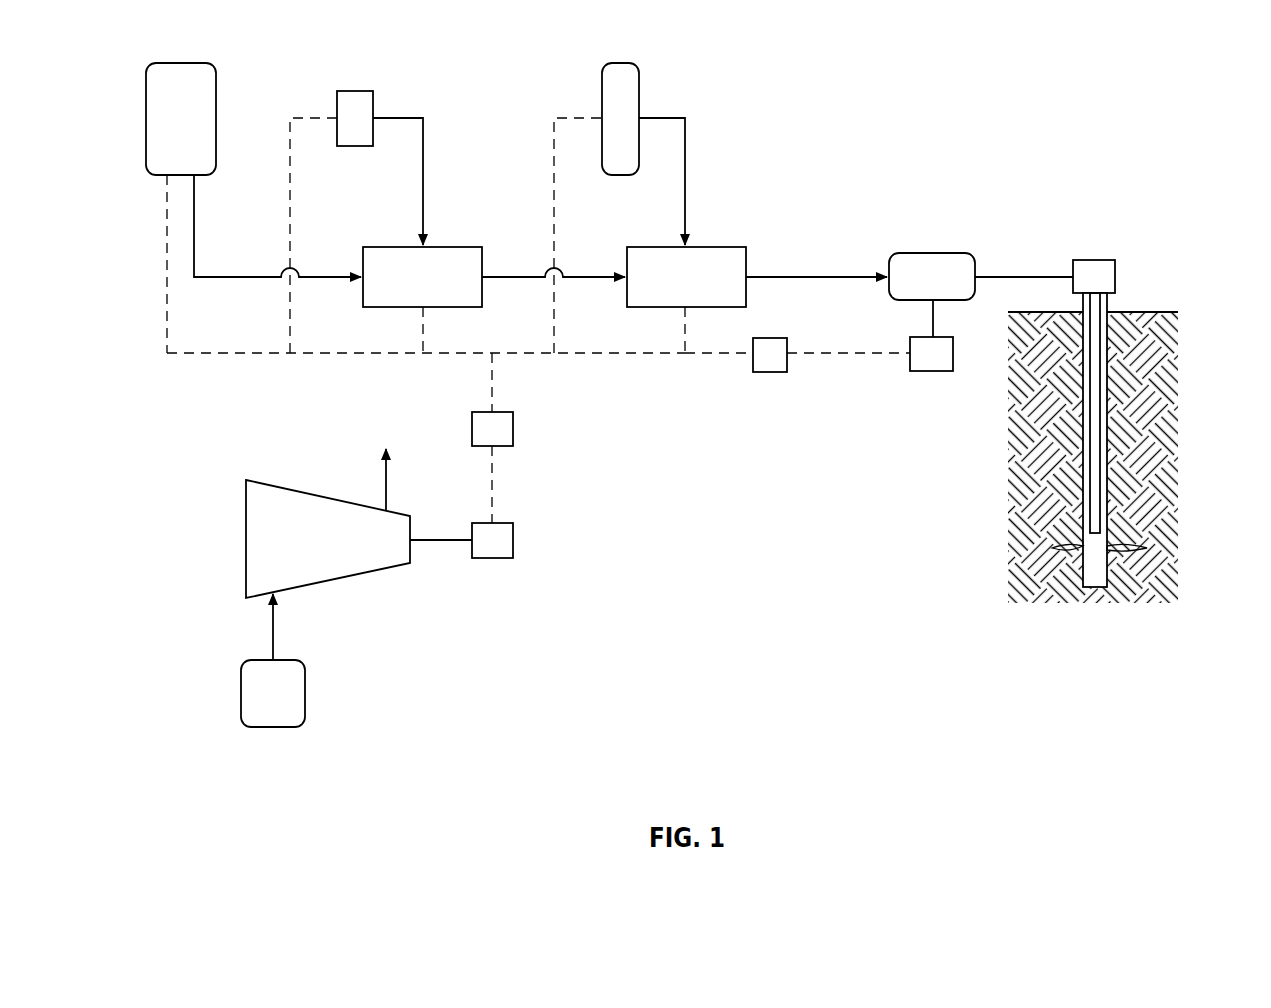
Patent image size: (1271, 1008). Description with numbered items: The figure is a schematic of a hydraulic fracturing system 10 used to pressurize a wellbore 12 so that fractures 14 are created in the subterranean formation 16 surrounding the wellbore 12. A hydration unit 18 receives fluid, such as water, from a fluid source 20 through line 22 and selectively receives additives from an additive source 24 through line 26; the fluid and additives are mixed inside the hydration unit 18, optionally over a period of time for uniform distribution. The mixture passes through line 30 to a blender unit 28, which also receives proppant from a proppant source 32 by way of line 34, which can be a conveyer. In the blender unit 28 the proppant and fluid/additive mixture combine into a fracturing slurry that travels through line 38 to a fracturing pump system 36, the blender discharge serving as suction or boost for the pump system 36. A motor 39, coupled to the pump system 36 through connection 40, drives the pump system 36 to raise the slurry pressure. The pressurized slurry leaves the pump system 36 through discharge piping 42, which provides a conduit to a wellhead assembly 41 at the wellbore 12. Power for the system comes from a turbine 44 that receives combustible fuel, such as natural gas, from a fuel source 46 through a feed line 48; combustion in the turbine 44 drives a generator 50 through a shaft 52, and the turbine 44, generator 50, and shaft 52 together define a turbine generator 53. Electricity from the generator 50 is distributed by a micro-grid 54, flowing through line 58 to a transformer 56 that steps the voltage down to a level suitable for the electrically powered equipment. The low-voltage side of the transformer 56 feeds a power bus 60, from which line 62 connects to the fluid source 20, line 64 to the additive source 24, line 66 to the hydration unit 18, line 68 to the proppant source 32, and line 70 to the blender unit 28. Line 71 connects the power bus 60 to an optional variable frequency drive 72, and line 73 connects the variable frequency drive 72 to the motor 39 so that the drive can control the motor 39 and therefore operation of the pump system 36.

The hydraulic fracturing system 10 is at (1063, 82).
The wellbore 12 is at (1107, 377).
The fractures 14 is at (1137, 548).
The subterranean formation 16 is at (1150, 437).
The hydration unit 18 is at (442, 247).
The fluid source 20 is at (146, 120).
The line 22 is at (222, 277).
The additive source 24 is at (350, 91).
The line 26 is at (395, 118).
The blender unit 28 is at (717, 247).
The line 30 is at (505, 277).
The proppant source 32 is at (602, 88).
The line 34 is at (712, 115).
The fracturing pump system 36 is at (930, 253).
The line 38 is at (797, 277).
The motor 39 is at (933, 371).
The connection 40 is at (933, 326).
The wellhead assembly 41 is at (1125, 237).
The discharge piping 42 is at (1023, 277).
The turbine 44 is at (246, 540).
The fuel source 46 is at (241, 695).
The feed line 48 is at (273, 628).
The generator 50 is at (513, 538).
The shaft 52 is at (440, 540).
The turbine generator 53 is at (480, 601).
The micro-grid 54 is at (662, 524).
The transformer 56 is at (513, 430).
The line 58 is at (492, 487).
The power bus 60 is at (238, 353).
The line 62 is at (167, 335).
The line 64 is at (290, 338).
The line 66 is at (423, 347).
The line 68 is at (554, 340).
The line 70 is at (685, 345).
The line 71 is at (716, 353).
The variable frequency drive 72 is at (770, 372).
The line 73 is at (840, 353).